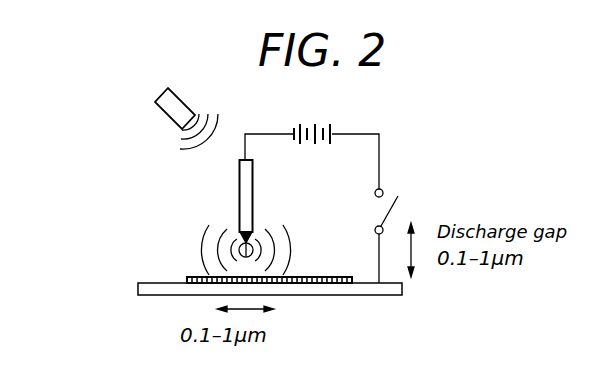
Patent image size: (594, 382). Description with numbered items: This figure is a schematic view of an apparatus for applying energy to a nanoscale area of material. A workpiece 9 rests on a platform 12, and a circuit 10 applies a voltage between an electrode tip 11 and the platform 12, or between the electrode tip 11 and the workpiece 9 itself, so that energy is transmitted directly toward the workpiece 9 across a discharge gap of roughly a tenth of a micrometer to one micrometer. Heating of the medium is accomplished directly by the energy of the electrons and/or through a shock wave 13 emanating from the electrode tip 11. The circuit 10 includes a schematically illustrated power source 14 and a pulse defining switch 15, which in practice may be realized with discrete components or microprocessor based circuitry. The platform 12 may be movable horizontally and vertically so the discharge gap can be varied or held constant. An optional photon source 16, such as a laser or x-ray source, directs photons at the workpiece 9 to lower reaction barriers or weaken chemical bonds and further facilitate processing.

The workpiece 9 is at (326, 284).
The circuit 10 is at (375, 128).
The electrode tip 11 is at (240, 239).
The platform 12 is at (160, 296).
The shock wave 13 is at (272, 250).
The power source 14 is at (310, 126).
The pulse defining switch 15 is at (392, 187).
The photon source 16 is at (167, 112).